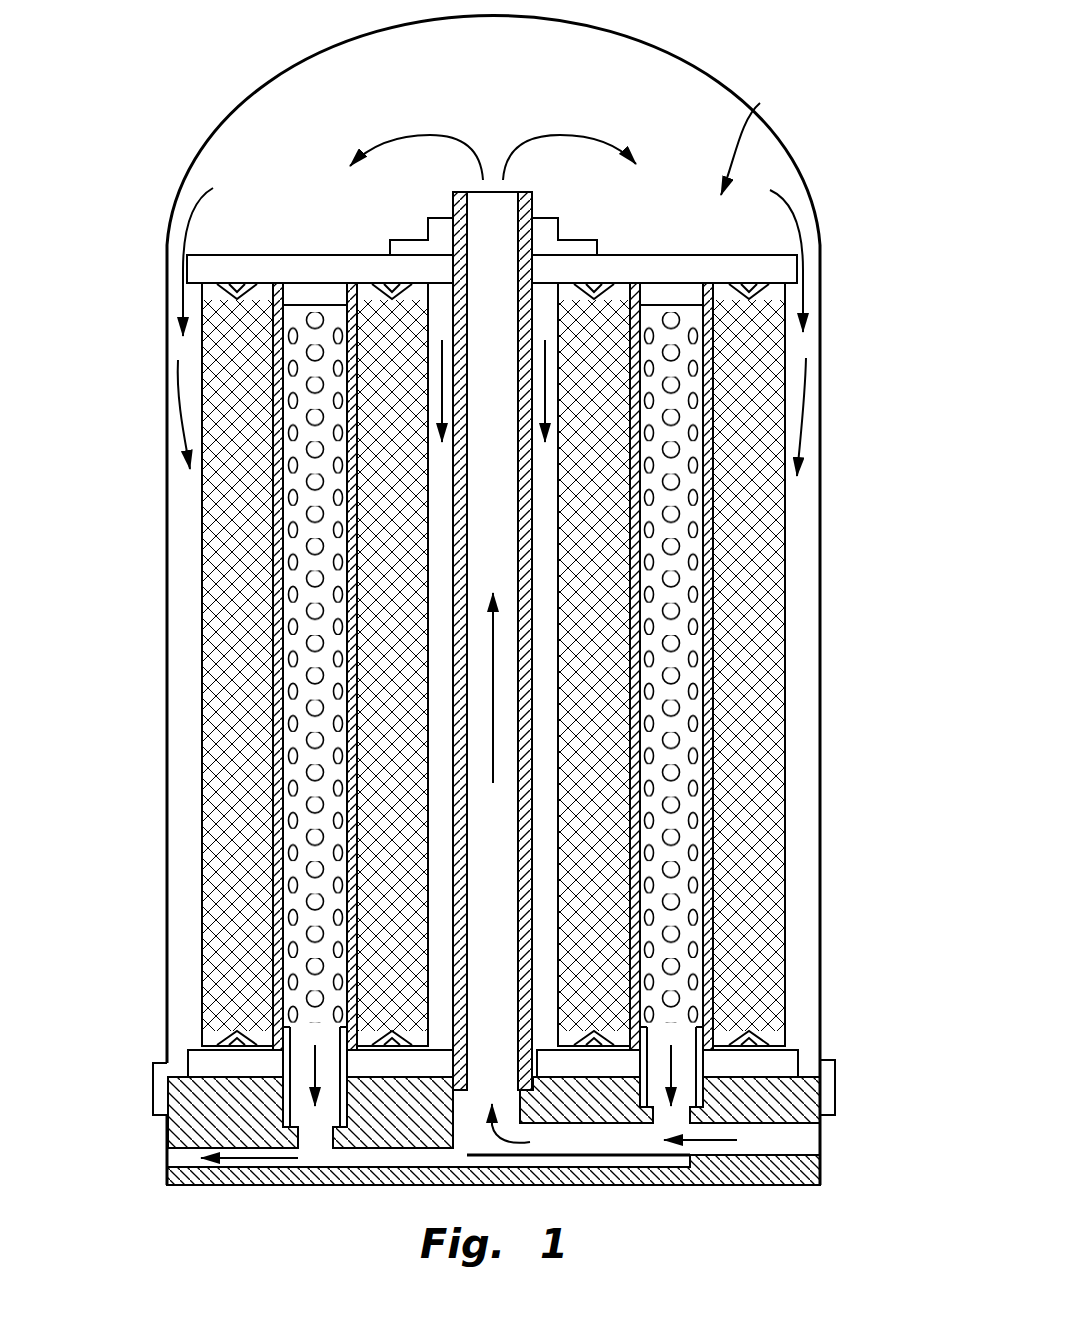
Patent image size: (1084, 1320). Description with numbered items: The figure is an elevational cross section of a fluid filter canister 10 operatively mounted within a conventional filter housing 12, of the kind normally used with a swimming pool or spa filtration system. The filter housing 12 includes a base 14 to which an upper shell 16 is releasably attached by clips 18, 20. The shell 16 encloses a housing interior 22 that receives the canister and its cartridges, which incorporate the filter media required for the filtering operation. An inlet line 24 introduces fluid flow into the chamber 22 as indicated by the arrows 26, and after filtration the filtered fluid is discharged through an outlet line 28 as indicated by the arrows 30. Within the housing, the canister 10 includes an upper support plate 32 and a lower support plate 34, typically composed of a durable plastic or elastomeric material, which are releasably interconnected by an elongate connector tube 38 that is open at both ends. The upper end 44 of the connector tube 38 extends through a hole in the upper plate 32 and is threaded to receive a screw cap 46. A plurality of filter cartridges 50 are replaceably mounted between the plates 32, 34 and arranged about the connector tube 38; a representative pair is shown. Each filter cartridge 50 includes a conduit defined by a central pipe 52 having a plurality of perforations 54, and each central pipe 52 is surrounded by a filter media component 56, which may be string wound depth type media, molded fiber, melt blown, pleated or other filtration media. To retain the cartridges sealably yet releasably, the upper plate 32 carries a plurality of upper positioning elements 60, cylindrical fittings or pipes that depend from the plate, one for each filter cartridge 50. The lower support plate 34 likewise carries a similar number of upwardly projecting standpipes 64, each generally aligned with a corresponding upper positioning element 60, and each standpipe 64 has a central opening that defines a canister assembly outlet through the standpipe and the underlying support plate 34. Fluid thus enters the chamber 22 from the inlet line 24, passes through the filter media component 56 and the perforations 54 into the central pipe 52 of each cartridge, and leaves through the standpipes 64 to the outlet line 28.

The fluid filter canister 10 is at (496, 600).
The filter housing 12 is at (820, 848).
The base 14 is at (168, 1130).
The upper shell 16 is at (167, 848).
The clip 18 is at (153, 1065).
The clip 20 is at (836, 1082).
The housing interior 22 is at (182, 632).
The inlet line 24 is at (723, 1158).
The arrows 26 is at (437, 130).
The outlet line 28 is at (278, 1170).
The arrows 30 is at (247, 1160).
The upper support plate 32 is at (526, 228).
The lower support plate 34 is at (799, 1060).
The connector tube 38 is at (452, 200).
The upper end of tube 44 is at (532, 212).
The screw cap 46 is at (427, 228).
The filter cartridge 50 is at (493, 648).
The central pipe 52 is at (277, 928).
The perforations 54 is at (300, 742).
The filter media component 56 is at (749, 736).
The upper positioning element 60 is at (492, 648).
The standpipe 64 is at (700, 1045).